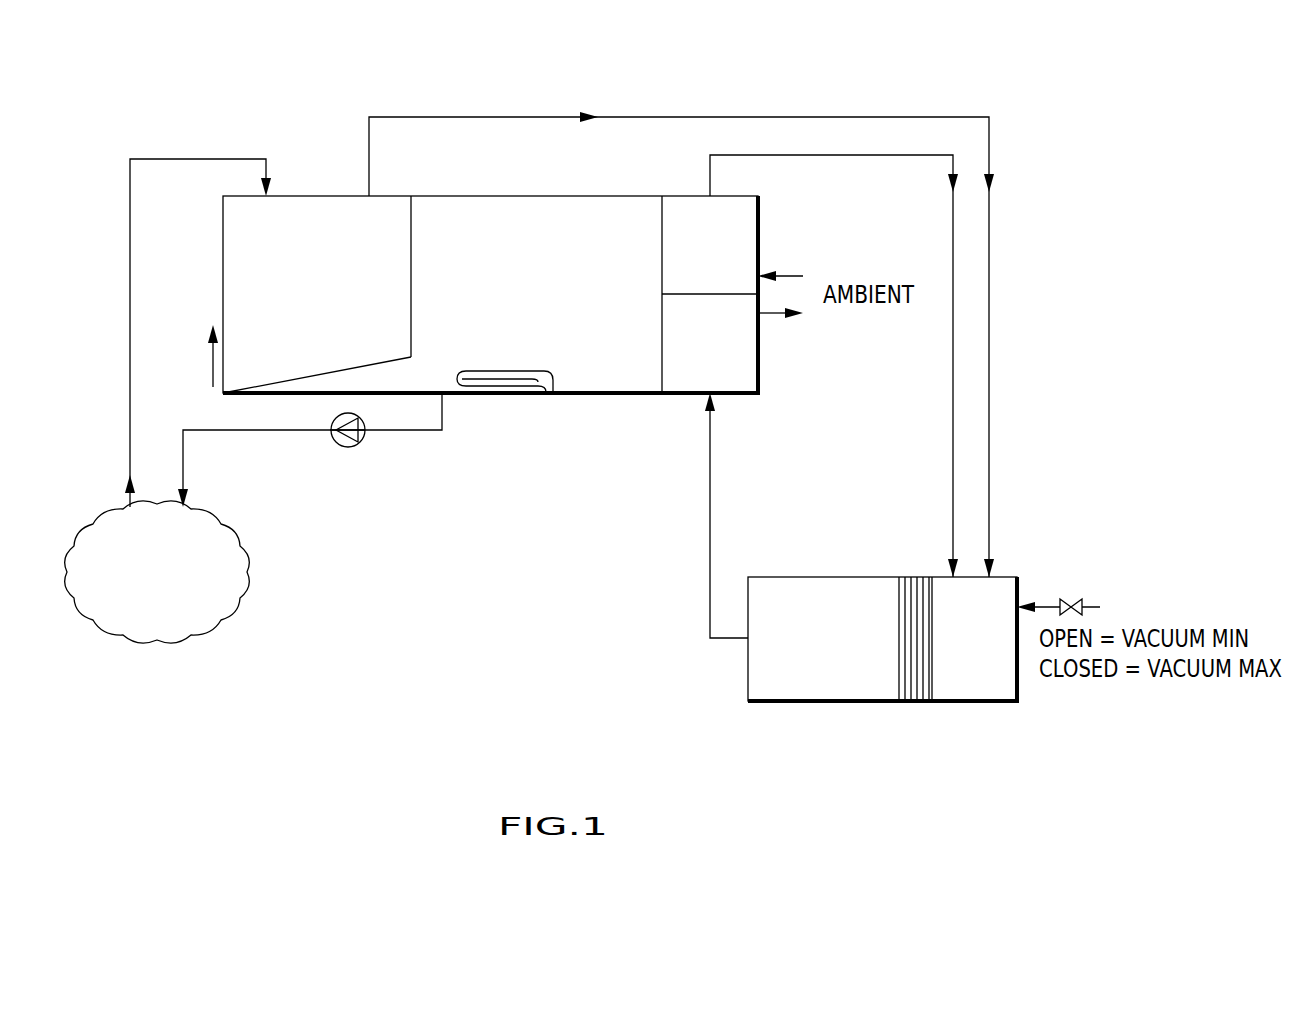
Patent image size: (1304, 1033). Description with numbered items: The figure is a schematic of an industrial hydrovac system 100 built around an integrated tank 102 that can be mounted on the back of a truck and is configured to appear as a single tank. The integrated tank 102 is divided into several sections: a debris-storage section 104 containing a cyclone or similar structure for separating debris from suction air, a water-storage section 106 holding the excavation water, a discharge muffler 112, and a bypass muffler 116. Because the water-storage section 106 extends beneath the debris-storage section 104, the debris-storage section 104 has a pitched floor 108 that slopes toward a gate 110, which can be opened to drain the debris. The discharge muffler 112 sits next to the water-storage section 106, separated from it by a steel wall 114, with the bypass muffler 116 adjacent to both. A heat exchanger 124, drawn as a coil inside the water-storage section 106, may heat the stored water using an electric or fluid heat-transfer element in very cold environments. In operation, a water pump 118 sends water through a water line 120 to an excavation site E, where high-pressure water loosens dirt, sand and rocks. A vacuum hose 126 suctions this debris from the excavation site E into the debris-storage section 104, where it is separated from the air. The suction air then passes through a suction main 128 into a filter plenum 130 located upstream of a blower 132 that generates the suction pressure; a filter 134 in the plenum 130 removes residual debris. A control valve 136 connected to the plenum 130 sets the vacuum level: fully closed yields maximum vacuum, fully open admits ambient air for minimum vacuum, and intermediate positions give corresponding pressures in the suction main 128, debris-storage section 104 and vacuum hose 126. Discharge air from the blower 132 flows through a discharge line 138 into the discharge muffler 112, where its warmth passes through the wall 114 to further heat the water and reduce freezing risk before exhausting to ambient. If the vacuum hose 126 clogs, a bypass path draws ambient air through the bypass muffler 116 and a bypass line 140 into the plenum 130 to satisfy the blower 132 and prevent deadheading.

The hydrovac system 100 is at (1073, 94).
The integrated tank 102 is at (490, 175).
The debris-storage section 104 is at (337, 305).
The water-storage section 106 is at (557, 305).
The pitched floor 108 is at (375, 348).
The gate 110 is at (213, 368).
The discharge muffler 112 is at (727, 355).
The wall 114 is at (660, 335).
The bypass muffler 116 is at (727, 255).
The water pump 118 is at (359, 442).
The water line 120 is at (250, 431).
The heater 124 is at (555, 392).
The vacuum hose 126 is at (130, 275).
The suction main 128 is at (848, 117).
The filter plenum 130 is at (990, 649).
The blower 132 is at (840, 649).
The filter 134 is at (914, 715).
The control valve 136 is at (1072, 598).
The discharge line 138 is at (710, 523).
The bypass line 140 is at (953, 404).
The excavation site E is at (165, 617).